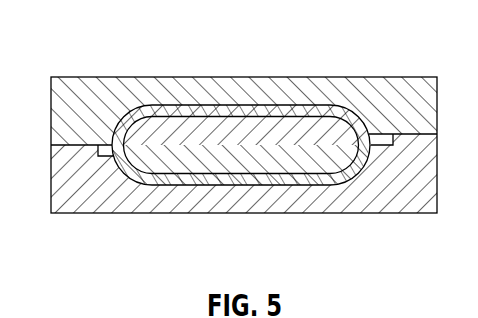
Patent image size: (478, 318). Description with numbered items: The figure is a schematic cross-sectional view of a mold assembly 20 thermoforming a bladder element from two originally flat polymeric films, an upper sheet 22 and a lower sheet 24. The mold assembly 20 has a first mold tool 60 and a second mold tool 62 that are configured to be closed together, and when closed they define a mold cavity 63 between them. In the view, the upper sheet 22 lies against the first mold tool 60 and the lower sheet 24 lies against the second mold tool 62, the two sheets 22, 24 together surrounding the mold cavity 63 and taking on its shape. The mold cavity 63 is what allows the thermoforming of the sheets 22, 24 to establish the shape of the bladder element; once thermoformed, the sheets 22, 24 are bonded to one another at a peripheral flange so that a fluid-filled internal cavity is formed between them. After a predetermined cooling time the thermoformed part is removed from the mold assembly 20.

The mold assembly 20 is at (85, 36).
The upper sheet 22 is at (175, 110).
The lower sheet 24 is at (227, 178).
The first mold tool 60 is at (406, 78).
The second mold tool 62 is at (405, 210).
The mold cavity 63 is at (167, 162).